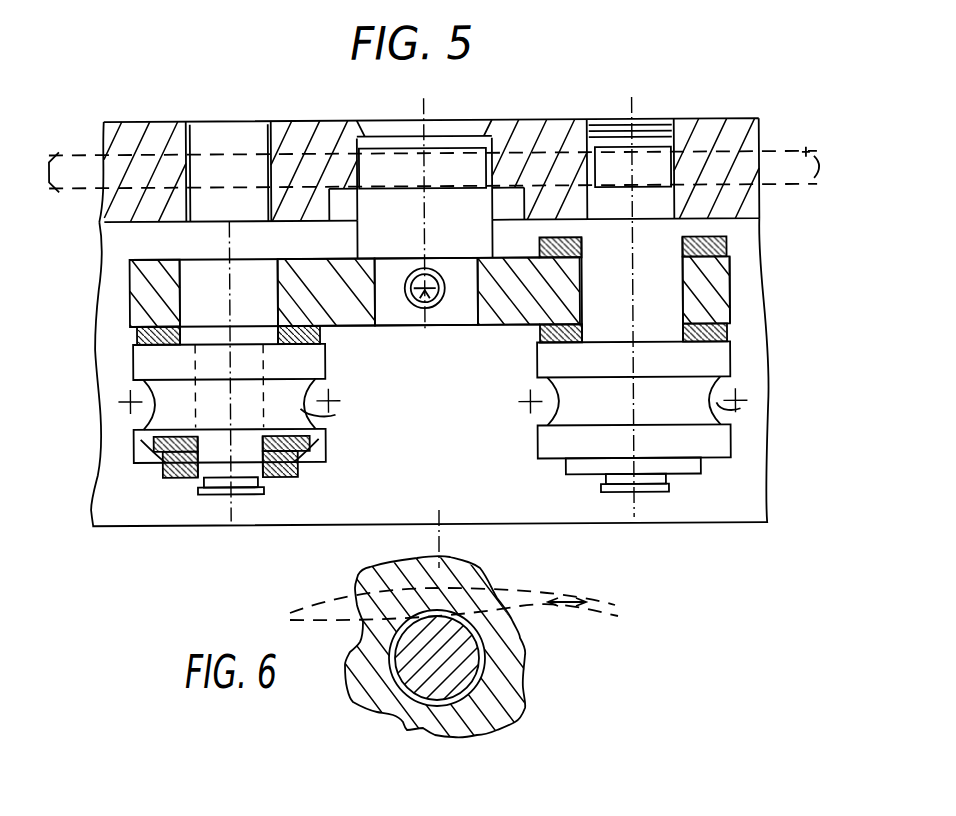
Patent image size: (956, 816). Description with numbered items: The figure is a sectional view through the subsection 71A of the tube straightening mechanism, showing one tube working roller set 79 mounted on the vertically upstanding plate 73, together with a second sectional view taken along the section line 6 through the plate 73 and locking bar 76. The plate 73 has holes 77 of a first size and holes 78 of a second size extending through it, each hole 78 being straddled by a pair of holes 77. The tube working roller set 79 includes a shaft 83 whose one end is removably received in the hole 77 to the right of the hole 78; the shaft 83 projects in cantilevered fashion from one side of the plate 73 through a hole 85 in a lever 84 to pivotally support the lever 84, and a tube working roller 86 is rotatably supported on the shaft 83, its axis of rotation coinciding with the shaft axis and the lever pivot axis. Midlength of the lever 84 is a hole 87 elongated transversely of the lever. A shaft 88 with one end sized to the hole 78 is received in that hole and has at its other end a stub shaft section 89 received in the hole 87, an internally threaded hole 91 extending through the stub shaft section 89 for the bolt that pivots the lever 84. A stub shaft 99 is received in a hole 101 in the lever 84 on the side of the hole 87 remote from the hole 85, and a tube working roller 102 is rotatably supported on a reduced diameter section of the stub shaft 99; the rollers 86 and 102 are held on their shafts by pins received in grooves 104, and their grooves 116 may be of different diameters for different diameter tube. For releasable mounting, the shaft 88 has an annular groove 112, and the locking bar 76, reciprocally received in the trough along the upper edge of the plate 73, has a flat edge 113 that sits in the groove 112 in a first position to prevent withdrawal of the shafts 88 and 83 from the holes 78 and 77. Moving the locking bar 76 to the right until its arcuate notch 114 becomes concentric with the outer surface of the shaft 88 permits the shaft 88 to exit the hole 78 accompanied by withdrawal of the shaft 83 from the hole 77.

In FIG. 5, the plate 73 is at (728, 132).
In FIG. 6, the plate 73 is at (407, 722).
In FIG. 5, the holes of a first size 77 is at (194, 138).
In FIG. 5, the section line 6 is at (330, 190).
In FIG. 5, the holes of a second size 78 is at (372, 167).
In FIG. 5, the shaft 88 is at (453, 133).
In FIG. 6, the shaft 88 is at (430, 678).
In FIG. 5, the shaft 83 is at (650, 165).
In FIG. 5, the locking bar 76 is at (812, 148).
In FIG. 6, the locking bar 76 is at (593, 608).
In FIG. 5, the annular groove 112 is at (462, 175).
In FIG. 6, the annular groove 112 is at (510, 713).
In FIG. 5, the stub shaft 99 is at (196, 290).
In FIG. 5, the stub shaft section 89 is at (388, 313).
In FIG. 5, the hole 87 is at (472, 310).
In FIG. 5, the internally threaded hole 91 is at (428, 313).
In FIG. 5, the lever 84 is at (727, 283).
In FIG. 5, the hole 85 is at (683, 295).
In FIG. 5, the tube working roller 86 is at (717, 361).
In FIG. 5, the grooves 116 is at (305, 413).
In FIG. 5, the tube working roller 102 is at (320, 438).
In FIG. 5, the grooves 104 is at (265, 486).
In FIG. 5, the hole 101 is at (272, 283).
In FIG. 5, the subsection 71A is at (211, 540).
In FIG. 5, the tube working roller set 79 is at (549, 504).
In FIG. 6, the flat edge 113 is at (318, 620).
In FIG. 6, the arcuate notch 114 is at (556, 607).